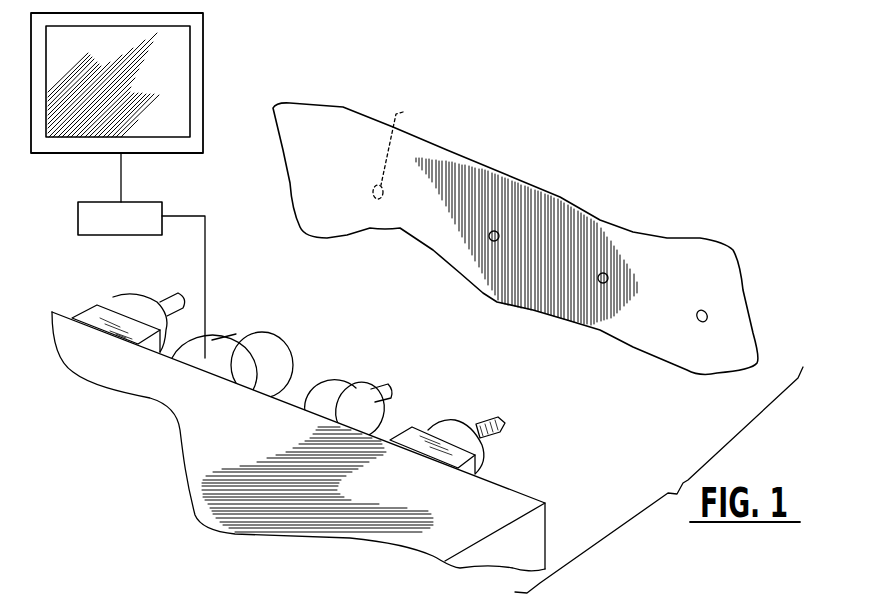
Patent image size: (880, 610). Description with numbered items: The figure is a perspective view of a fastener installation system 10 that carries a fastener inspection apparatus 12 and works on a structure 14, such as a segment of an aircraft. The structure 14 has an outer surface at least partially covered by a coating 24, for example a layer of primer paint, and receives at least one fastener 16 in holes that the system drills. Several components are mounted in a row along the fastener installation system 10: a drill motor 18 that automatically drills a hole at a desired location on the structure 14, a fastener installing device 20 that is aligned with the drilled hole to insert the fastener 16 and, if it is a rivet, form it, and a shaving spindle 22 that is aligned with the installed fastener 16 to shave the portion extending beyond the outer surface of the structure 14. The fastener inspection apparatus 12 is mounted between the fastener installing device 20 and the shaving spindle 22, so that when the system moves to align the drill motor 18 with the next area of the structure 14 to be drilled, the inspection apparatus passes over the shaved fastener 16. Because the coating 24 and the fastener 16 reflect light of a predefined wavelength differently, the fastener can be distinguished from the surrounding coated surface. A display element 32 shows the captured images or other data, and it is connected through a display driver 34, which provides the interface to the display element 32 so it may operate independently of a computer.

The fastener installation system 10 is at (427, 452).
The fastener inspection apparatus 12 is at (251, 347).
The structure 14 is at (515, 245).
The fastener 16 is at (639, 233).
The drill motor 18 is at (450, 423).
The fastener installing device 20 is at (351, 395).
The shaving spindle 22 is at (128, 309).
The coating 24 is at (480, 190).
The display element 32 is at (142, 81).
The display driver 34 is at (144, 255).